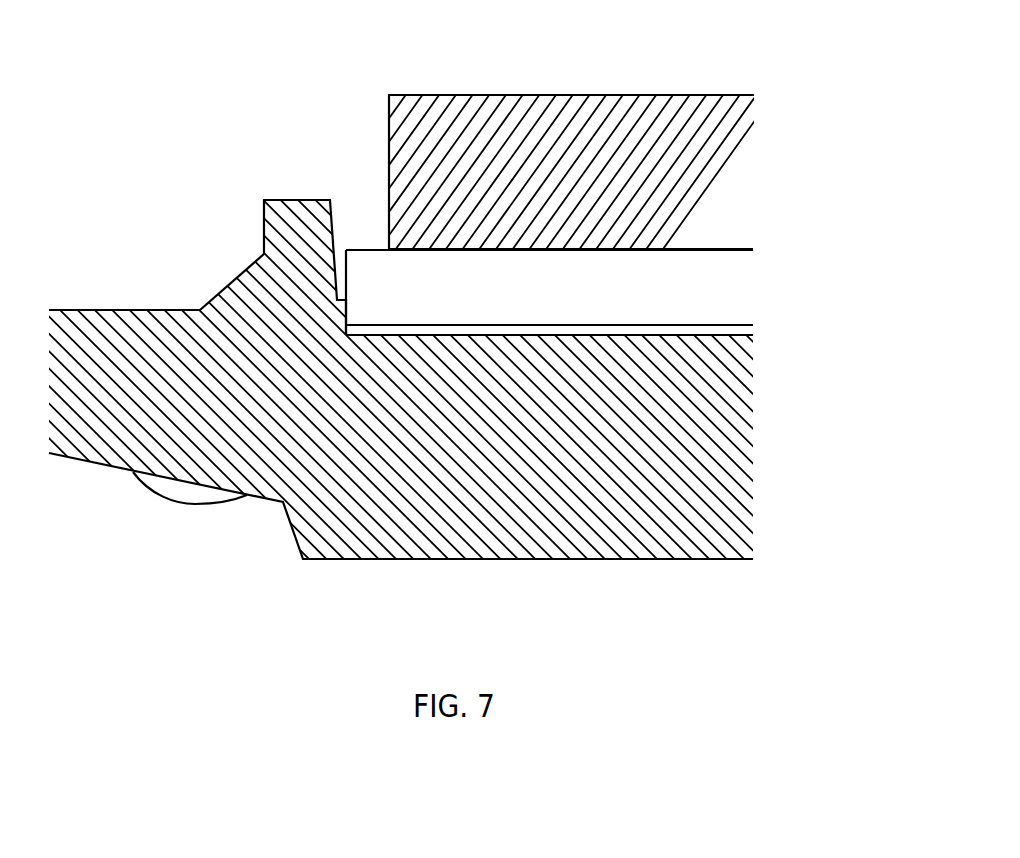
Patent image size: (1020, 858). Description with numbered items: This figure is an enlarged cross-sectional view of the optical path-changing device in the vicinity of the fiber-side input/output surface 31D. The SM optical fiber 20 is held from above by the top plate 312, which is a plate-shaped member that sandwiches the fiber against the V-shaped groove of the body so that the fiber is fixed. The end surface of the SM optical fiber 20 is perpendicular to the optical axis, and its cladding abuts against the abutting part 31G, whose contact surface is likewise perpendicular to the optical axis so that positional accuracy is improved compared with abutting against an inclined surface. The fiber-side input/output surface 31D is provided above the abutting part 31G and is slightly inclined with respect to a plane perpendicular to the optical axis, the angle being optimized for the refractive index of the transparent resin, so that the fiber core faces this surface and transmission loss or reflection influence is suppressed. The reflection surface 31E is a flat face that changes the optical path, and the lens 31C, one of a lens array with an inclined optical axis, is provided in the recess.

The top plate 312 is at (578, 99).
The SM optical fiber 20 is at (737, 293).
The fiber-side input/output surface 31D is at (335, 236).
The reflection surface 31E is at (216, 297).
The lens 31C is at (188, 507).
The abutting part 31G is at (352, 329).